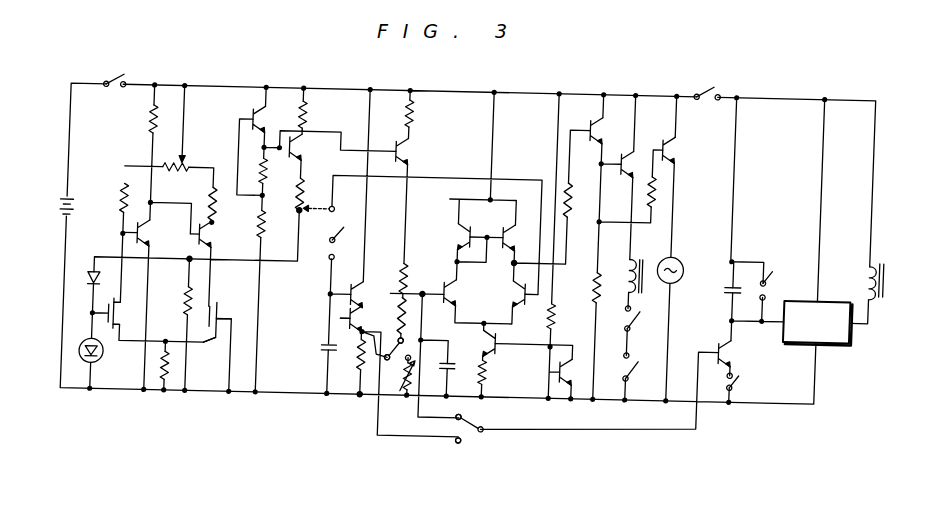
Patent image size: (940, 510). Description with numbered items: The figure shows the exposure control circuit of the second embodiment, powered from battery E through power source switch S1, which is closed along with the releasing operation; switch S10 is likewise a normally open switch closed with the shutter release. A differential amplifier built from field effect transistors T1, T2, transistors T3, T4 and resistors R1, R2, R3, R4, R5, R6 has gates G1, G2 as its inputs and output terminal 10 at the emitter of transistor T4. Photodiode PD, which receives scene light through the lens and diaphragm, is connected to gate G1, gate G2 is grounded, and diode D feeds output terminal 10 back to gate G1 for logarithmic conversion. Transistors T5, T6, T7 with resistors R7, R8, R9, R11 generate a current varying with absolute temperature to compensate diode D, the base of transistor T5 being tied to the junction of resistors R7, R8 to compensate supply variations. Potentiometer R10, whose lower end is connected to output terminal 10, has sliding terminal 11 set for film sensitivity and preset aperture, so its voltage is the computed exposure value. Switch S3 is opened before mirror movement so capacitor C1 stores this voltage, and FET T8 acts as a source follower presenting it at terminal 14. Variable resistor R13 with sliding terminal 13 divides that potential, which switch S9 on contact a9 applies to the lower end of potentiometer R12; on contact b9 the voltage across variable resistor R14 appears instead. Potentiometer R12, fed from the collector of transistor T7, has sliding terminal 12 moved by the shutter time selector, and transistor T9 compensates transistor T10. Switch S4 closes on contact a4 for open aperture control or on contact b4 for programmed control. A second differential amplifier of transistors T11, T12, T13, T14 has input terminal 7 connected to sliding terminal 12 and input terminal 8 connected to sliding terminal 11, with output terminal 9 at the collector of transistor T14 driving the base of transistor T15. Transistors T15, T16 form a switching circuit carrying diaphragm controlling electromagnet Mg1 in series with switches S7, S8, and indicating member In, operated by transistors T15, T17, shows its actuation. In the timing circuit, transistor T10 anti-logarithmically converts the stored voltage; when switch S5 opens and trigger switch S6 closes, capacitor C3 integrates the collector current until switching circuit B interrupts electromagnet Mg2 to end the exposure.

The power source switch S1 is at (108, 80).
The resistor R5 is at (142, 123).
The resistor R6 is at (174, 160).
The resistor R3 is at (120, 200).
The resistor R4 is at (206, 207).
The transistor T3 is at (145, 235).
The transistor T4 is at (197, 240).
The power source battery E is at (57, 206).
The diode D is at (90, 276).
The gate of FET T1 G1 is at (102, 302).
The field effect transistor T1 is at (128, 313).
The resistor R2 is at (184, 306).
The output terminal 10 is at (187, 265).
The gate of FET T2 G2 is at (214, 314).
The field effect transistor T2 is at (207, 334).
The resistor R1 is at (172, 374).
The photodiode PD is at (105, 362).
The transistor T5 is at (271, 119).
The resistor R7 is at (274, 171).
The resistor R8 is at (271, 224).
The transistor T6 is at (289, 154).
The resistor R9 is at (301, 116).
The potentiometer R10 is at (311, 198).
The sliding terminal 11 is at (310, 227).
The switch S3 is at (342, 233).
The transistor T7 is at (418, 151).
The resistor R11 is at (408, 114).
The field effect transistor T8 is at (357, 293).
The transistor T9 is at (363, 314).
The terminal 14 is at (349, 320).
The contact a9 is at (371, 346).
The capacitor C1 is at (320, 333).
The variable resistor R13 is at (358, 367).
The sliding terminal 13 is at (352, 407).
The potentiometer R12 is at (408, 278).
The sliding terminal 12 is at (412, 320).
The input terminal 7 is at (426, 300).
The switch S9 is at (412, 334).
The contact b9 is at (454, 364).
The variable resistor R14 is at (401, 395).
The contact b4 is at (468, 417).
The switch S4 is at (471, 433).
The contact a4 is at (463, 444).
The transistor T11 is at (467, 296).
The transistor T12 is at (522, 293).
The transistor T13 is at (459, 237).
The transistor T14 is at (510, 226).
The output terminal 9 is at (512, 261).
The input terminal 8 is at (541, 316).
The transistor T15 is at (600, 106).
The transistor T16 is at (630, 156).
The transistor T17 is at (668, 149).
The diaphragm controlling electromagnet Mg1 is at (643, 282).
The switch S7 is at (618, 321).
The switch S8 is at (614, 367).
The indicating member In is at (678, 258).
The switch S10 is at (708, 81).
The capacitor C3 is at (726, 286).
The switch S5 is at (780, 277).
The switching circuit B is at (818, 323).
The electromagnet Mg2 is at (887, 284).
The transistor T10 is at (735, 346).
The trigger switch S6 is at (740, 380).